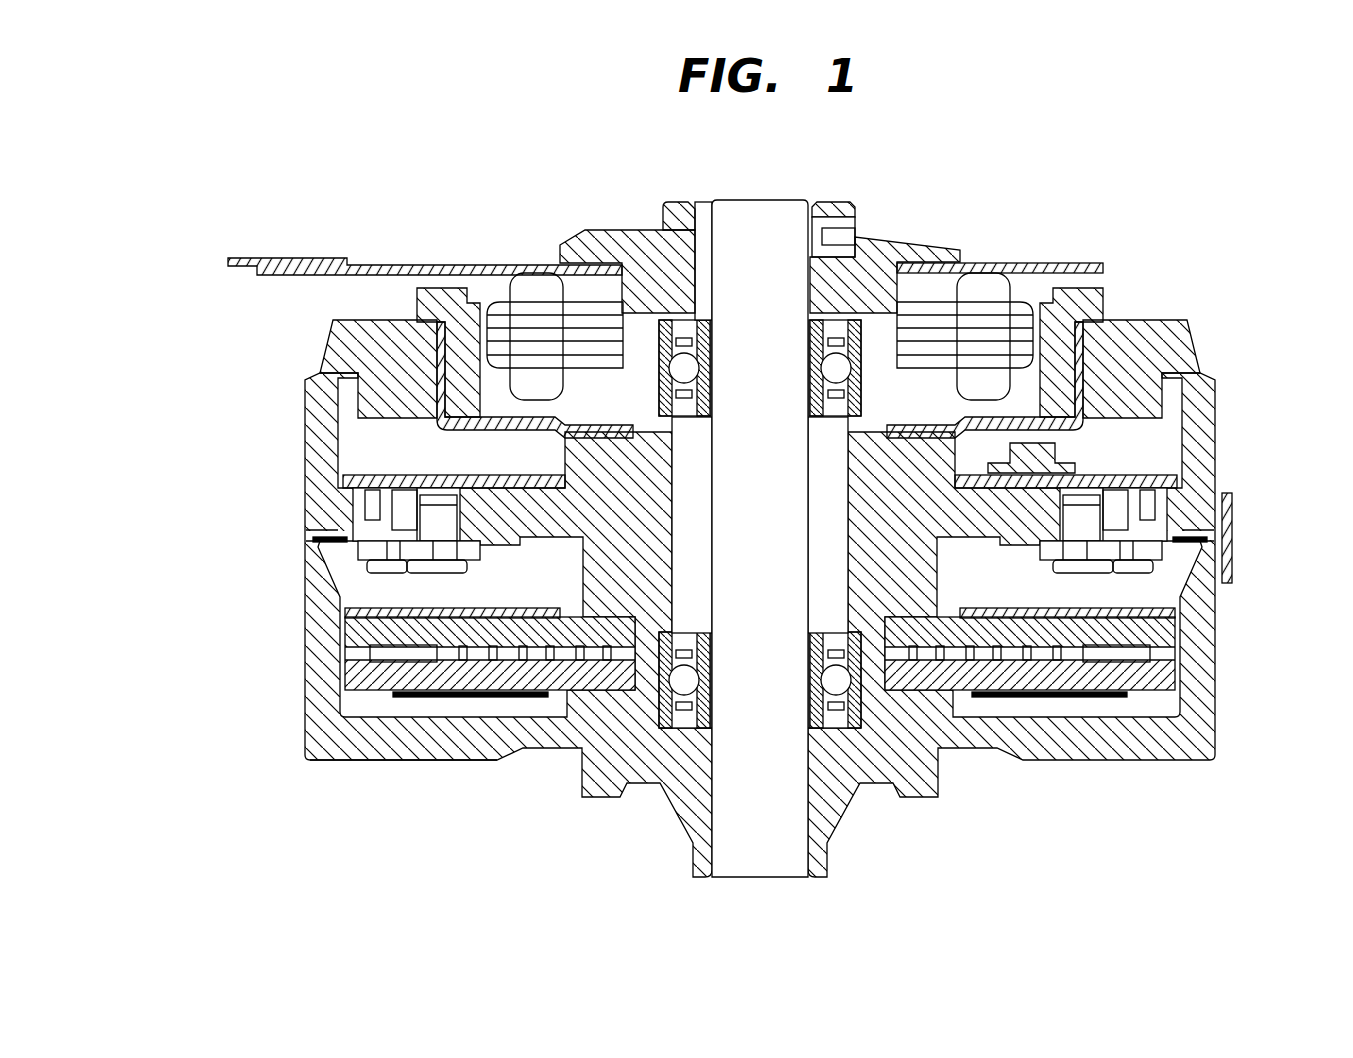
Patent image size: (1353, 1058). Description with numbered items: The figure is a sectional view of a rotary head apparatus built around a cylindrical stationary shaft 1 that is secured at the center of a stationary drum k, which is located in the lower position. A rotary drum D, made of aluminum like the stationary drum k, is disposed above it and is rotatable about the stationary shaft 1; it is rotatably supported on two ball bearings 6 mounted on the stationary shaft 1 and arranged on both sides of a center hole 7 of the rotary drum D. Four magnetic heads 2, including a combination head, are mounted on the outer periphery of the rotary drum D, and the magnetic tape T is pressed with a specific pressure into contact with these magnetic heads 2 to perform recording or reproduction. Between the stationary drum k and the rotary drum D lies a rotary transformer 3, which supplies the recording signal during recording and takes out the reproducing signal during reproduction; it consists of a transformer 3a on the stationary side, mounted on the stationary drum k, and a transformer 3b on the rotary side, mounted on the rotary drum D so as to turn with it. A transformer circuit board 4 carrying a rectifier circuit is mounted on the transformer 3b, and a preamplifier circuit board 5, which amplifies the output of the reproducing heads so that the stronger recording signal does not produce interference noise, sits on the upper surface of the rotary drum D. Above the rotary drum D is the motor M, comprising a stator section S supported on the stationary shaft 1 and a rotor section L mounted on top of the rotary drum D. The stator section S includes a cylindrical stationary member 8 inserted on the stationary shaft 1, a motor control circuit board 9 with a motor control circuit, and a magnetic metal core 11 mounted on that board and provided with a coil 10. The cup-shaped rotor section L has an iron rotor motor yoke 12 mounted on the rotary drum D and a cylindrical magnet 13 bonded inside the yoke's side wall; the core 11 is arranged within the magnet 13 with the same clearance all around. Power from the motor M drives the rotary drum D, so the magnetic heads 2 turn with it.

The stationary shaft 1 is at (750, 872).
The magnetic heads 2 is at (340, 553).
The rotary transformer 3 is at (357, 702).
The transformer on the stationary side 3a is at (355, 690).
The transformer on the rotary side 3b is at (348, 632).
The transformer circuit board 4 is at (346, 594).
The preamplifier circuit board 5 is at (340, 480).
The ball bearings 6 is at (682, 345).
The center hole 7 is at (703, 468).
The cylindrical stationary member 8 is at (876, 243).
The motor control circuit board 9 is at (428, 266).
The coil 10 is at (985, 292).
The magnetic metal core 11 is at (1015, 300).
The rotor motor yoke 12 is at (1090, 423).
The cylindrical magnet 13 is at (1096, 297).
The motor M is at (315, 216).
The stator section S is at (964, 239).
The rotary drum D is at (257, 417).
The rotor section L is at (1204, 332).
The magnetic tape T is at (1233, 572).
The stationary drum k is at (328, 771).